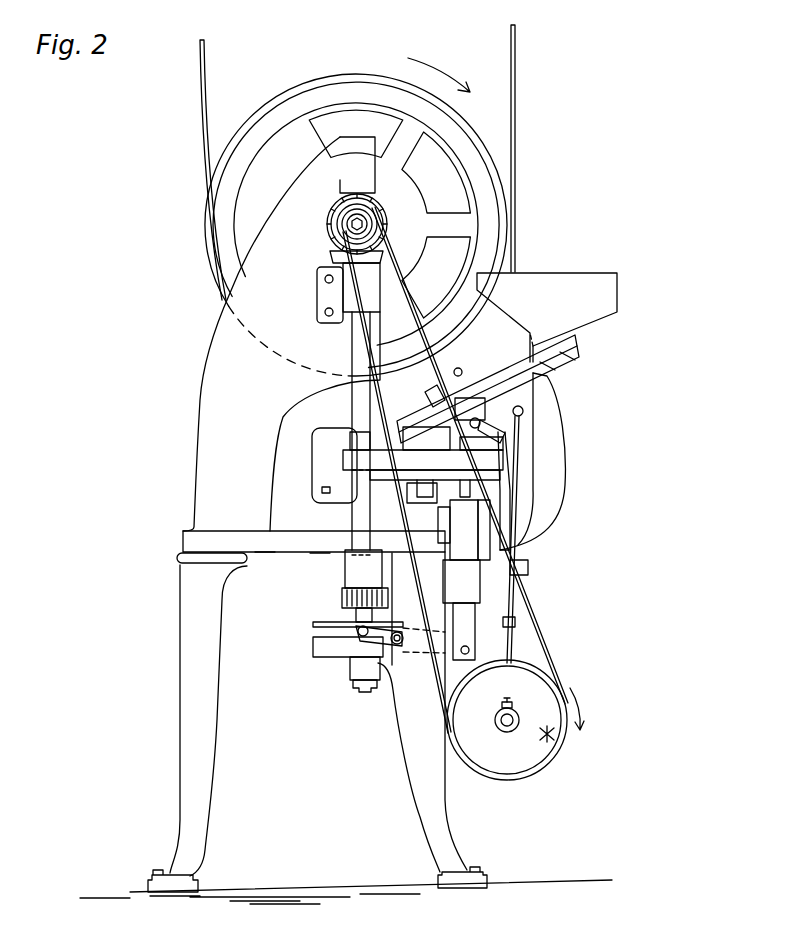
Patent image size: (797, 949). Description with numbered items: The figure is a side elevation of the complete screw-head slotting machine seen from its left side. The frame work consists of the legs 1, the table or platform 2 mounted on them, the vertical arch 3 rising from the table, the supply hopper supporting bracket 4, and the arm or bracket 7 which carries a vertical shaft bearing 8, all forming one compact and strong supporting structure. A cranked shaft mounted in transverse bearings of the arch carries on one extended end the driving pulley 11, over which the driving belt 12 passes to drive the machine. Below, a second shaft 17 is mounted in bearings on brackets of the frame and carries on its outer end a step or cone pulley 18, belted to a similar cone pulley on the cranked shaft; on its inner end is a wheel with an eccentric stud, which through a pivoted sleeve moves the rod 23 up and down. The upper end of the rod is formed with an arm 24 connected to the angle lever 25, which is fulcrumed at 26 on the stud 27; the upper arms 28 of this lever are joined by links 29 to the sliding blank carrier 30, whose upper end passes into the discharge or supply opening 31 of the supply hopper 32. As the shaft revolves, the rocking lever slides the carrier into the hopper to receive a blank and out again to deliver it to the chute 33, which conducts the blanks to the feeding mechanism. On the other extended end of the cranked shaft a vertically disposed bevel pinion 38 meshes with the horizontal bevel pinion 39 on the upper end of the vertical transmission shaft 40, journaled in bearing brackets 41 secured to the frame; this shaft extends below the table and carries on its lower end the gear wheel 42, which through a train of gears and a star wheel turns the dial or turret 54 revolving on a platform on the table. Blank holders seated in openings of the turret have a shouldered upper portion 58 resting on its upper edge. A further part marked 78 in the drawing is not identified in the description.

The legs 1 is at (412, 772).
The table or platform 2 is at (181, 544).
The vertical arch 3 is at (228, 303).
The supply hopper supporting bracket 4 is at (556, 456).
The arm or bracket 7 is at (394, 712).
The vertical shaft bearing 8 is at (350, 669).
The driving pulley 11 is at (258, 114).
The driving belt 12 is at (198, 110).
The shaft 17 is at (516, 716).
The step or cone pulley 18 is at (534, 744).
The rod 23 is at (512, 645).
The arm 24 is at (522, 412).
The angle lever 25 is at (512, 405).
The fulcrum 26 is at (502, 426).
The stud 27 is at (502, 434).
The upper arms or portions 28 is at (486, 398).
The links 29 is at (458, 368).
The sliding blank carrier 30 is at (486, 364).
The discharge or supply opening 31 is at (578, 341).
The supply hopper 32 is at (547, 317).
The chute 33 is at (522, 373).
The bevel pinion 38 is at (327, 223).
The bevel pinion 39 is at (331, 255).
The vertical transmission shaft 40 is at (354, 345).
The bearing brackets 41 is at (345, 296).
The gear wheel 42 is at (342, 600).
The dial or turret 54 is at (345, 460).
The shouldered upper portion 58 is at (500, 448).
The bracket 78 is at (425, 386).